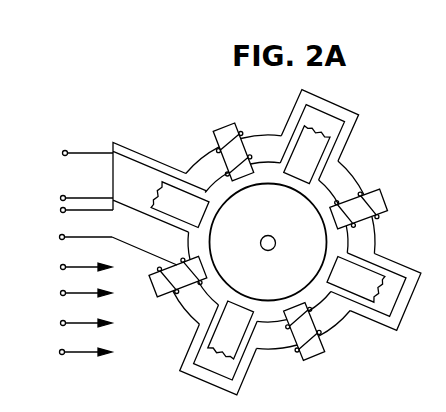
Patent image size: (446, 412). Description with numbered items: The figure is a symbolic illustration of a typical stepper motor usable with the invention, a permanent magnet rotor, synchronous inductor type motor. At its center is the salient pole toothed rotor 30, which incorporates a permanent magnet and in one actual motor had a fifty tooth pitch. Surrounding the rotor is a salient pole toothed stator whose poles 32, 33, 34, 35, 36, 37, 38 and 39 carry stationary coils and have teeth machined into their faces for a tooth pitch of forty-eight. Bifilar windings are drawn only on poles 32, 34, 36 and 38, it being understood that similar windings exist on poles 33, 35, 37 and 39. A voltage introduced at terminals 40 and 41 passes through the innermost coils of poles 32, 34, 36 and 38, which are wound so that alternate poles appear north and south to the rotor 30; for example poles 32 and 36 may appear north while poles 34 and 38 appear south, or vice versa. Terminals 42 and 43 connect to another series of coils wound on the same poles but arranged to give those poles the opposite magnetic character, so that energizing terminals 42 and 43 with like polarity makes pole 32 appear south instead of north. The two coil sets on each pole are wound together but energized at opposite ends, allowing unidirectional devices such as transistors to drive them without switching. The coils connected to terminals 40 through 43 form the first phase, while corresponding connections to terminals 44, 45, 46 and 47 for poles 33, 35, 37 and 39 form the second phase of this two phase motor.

The rotor 30 is at (282, 274).
The pole 32 is at (221, 122).
The pole 33 is at (316, 160).
The pole 34 is at (386, 214).
The pole 35 is at (356, 286).
The pole 36 is at (316, 350).
The pole 37 is at (240, 332).
The pole 38 is at (176, 300).
The pole 39 is at (188, 214).
The terminal 40 is at (66, 150).
The terminal 41 is at (64, 195).
The terminal 42 is at (60, 209).
The terminal 43 is at (63, 234).
The terminal 44 is at (60, 267).
The terminal 45 is at (60, 294).
The terminal 46 is at (72, 309).
The terminal 47 is at (59, 351).